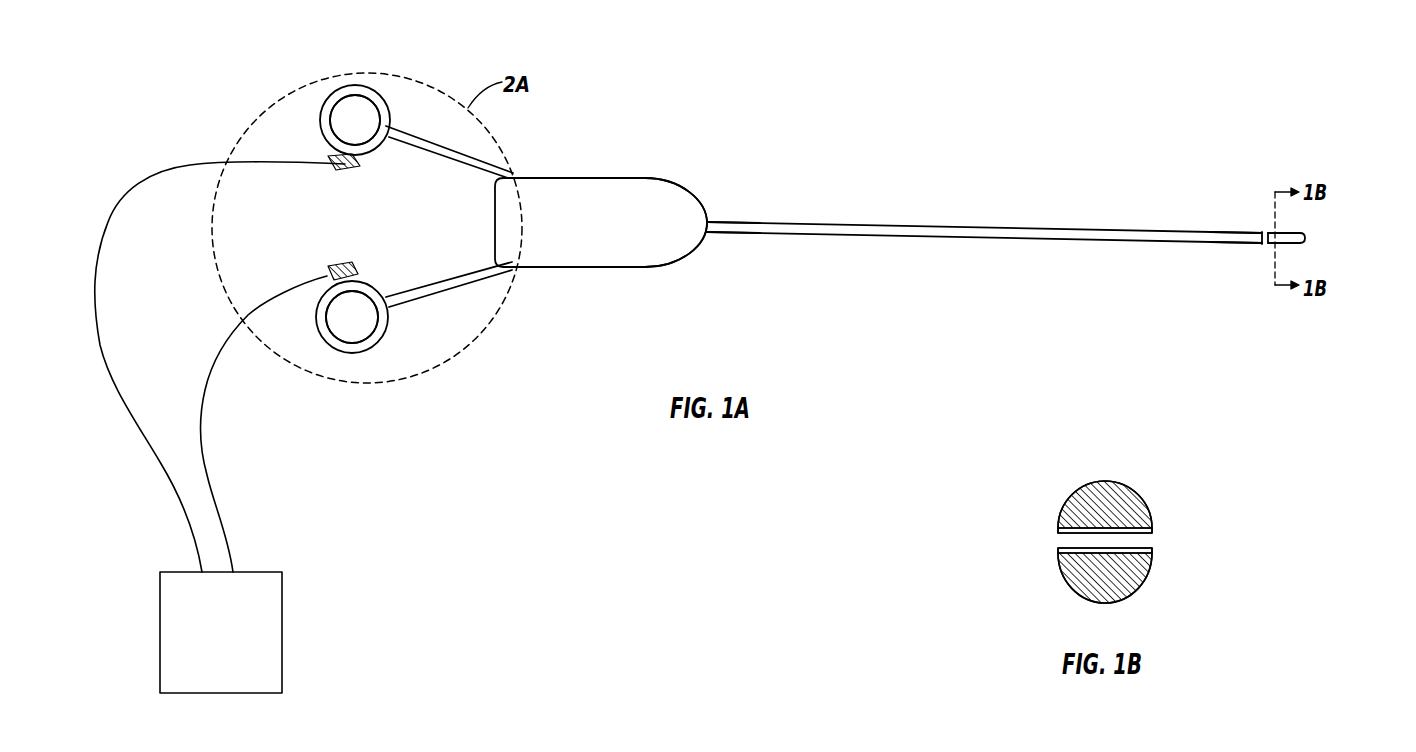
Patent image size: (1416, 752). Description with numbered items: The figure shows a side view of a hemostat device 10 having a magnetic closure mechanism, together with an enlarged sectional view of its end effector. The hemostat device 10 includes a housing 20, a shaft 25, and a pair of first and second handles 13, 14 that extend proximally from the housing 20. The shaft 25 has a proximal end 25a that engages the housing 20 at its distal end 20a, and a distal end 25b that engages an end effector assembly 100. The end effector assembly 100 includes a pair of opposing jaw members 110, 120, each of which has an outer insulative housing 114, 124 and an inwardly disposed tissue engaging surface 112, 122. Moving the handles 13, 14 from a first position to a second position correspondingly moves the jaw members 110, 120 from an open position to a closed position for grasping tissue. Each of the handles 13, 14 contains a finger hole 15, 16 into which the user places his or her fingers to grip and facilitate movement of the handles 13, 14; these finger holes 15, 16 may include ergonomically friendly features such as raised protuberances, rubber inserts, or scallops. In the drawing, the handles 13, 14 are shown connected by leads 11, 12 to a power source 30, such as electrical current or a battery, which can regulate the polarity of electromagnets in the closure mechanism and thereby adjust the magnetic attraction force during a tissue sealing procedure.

In FIG. 1A, the hemostat device 10 is at (781, 112).
In FIG. 1A, the first electrode connection 11 is at (335, 158).
In FIG. 1A, the second electrode connection 12 is at (327, 272).
In FIG. 1A, the first handle 13 is at (352, 84).
In FIG. 1A, the second handle 14 is at (338, 349).
In FIG. 1A, the finger hole 15 is at (363, 112).
In FIG. 1A, the finger hole 16 is at (352, 327).
In FIG. 1A, the housing 20 is at (595, 178).
In FIG. 1A, the distal end of housing 20a is at (683, 196).
In FIG. 1A, the shaft 25 is at (873, 223).
In FIG. 1A, the proximal end of shaft 25a is at (706, 218).
In FIG. 1A, the distal end of shaft 25b is at (1264, 230).
In FIG. 1A, the power source 30 is at (282, 573).
In FIG. 1A, the end effector assembly 100 is at (1336, 204).
In FIG. 1A, the jaw member 110 is at (1300, 232).
In FIG. 1B, the jaw member 110 is at (1105, 478).
In FIG. 1B, the tissue engaging surface 112 is at (1148, 538).
In FIG. 1B, the outer insulative housing 114 is at (1130, 507).
In FIG. 1A, the jaw member 120 is at (1301, 246).
In FIG. 1B, the jaw member 120 is at (1105, 605).
In FIG. 1B, the tissue engaging surface 122 is at (1068, 546).
In FIG. 1B, the outer insulative housing 124 is at (1135, 578).